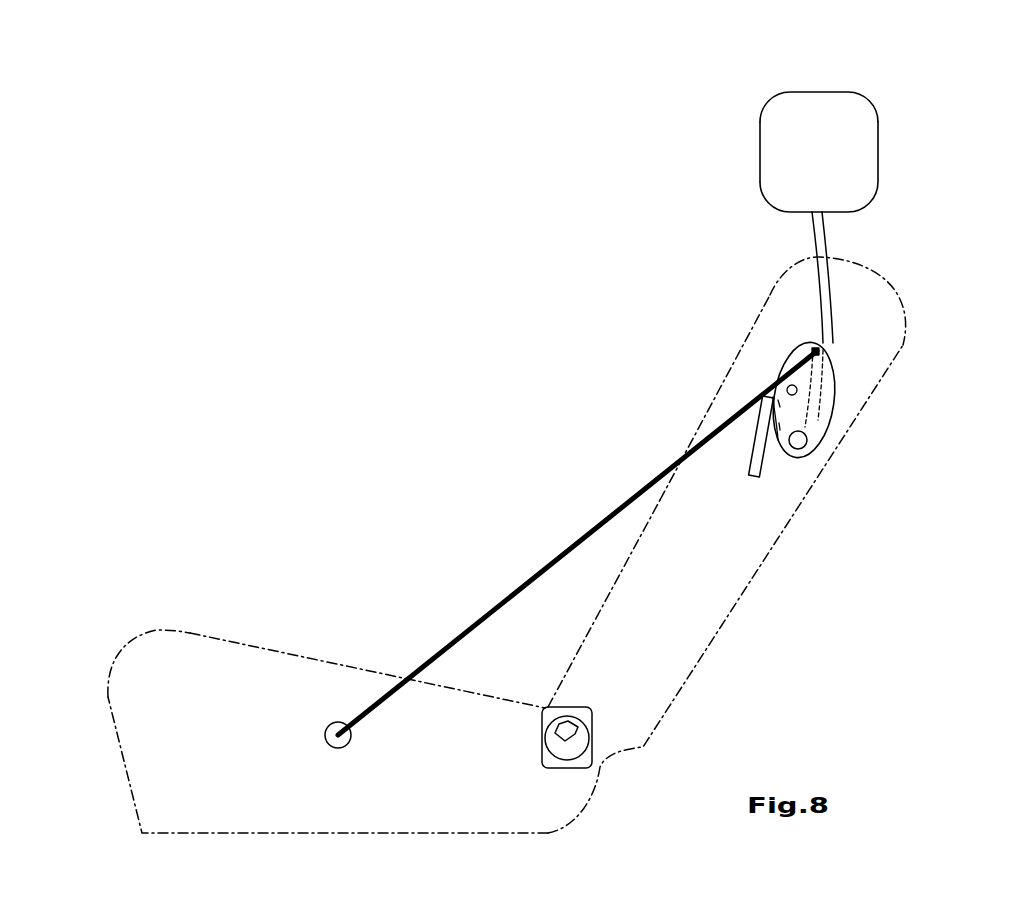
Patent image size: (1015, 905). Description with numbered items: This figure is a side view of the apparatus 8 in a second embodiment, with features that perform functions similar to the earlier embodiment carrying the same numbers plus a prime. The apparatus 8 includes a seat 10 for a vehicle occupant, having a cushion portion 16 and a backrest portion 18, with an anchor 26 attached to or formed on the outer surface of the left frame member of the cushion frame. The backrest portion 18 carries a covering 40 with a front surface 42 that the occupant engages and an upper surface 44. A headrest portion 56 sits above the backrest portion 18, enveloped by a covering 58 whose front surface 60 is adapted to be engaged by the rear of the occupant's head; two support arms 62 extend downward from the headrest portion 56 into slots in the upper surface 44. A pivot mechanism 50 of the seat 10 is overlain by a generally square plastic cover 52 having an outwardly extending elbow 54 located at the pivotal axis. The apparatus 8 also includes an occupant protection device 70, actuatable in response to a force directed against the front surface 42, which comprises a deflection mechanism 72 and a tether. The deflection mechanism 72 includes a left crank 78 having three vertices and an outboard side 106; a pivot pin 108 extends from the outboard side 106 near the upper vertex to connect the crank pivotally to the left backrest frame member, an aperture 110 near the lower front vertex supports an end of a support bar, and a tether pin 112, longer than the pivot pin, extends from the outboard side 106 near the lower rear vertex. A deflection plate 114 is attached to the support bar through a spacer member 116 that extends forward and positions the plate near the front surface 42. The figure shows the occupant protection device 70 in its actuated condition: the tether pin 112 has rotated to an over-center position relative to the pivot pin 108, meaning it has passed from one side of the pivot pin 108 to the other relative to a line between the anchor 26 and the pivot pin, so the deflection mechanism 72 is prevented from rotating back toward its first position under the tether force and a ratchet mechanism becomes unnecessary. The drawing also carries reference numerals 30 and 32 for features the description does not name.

The apparatus 8 is at (435, 367).
The seat 10 is at (498, 493).
The cushion portion 16 is at (170, 688).
The backrest portion 18 is at (789, 313).
The anchor 26 is at (328, 737).
The front portion of seat cushion 30 is at (157, 630).
The link 32 is at (330, 657).
The covering 40 is at (598, 603).
The front surface 42 is at (710, 407).
The upper surface 44 is at (887, 280).
The pivot mechanism 50 is at (572, 768).
The plastic cover 52 is at (555, 772).
The elbow 54 is at (575, 735).
The headrest portion 56 is at (840, 147).
The covering 58 is at (815, 90).
The front surface 60 is at (758, 153).
The support arms 62 is at (822, 238).
The occupant protection device 70 is at (862, 395).
The deflection mechanism 72 is at (847, 373).
The left crank 78 is at (784, 363).
The outboard side 106 is at (797, 405).
The pivot pin 108 is at (787, 389).
The aperture 110 is at (807, 447).
The tether pin 112 is at (832, 342).
The deflection plate 114 is at (753, 442).
The spacer member 116 is at (778, 440).